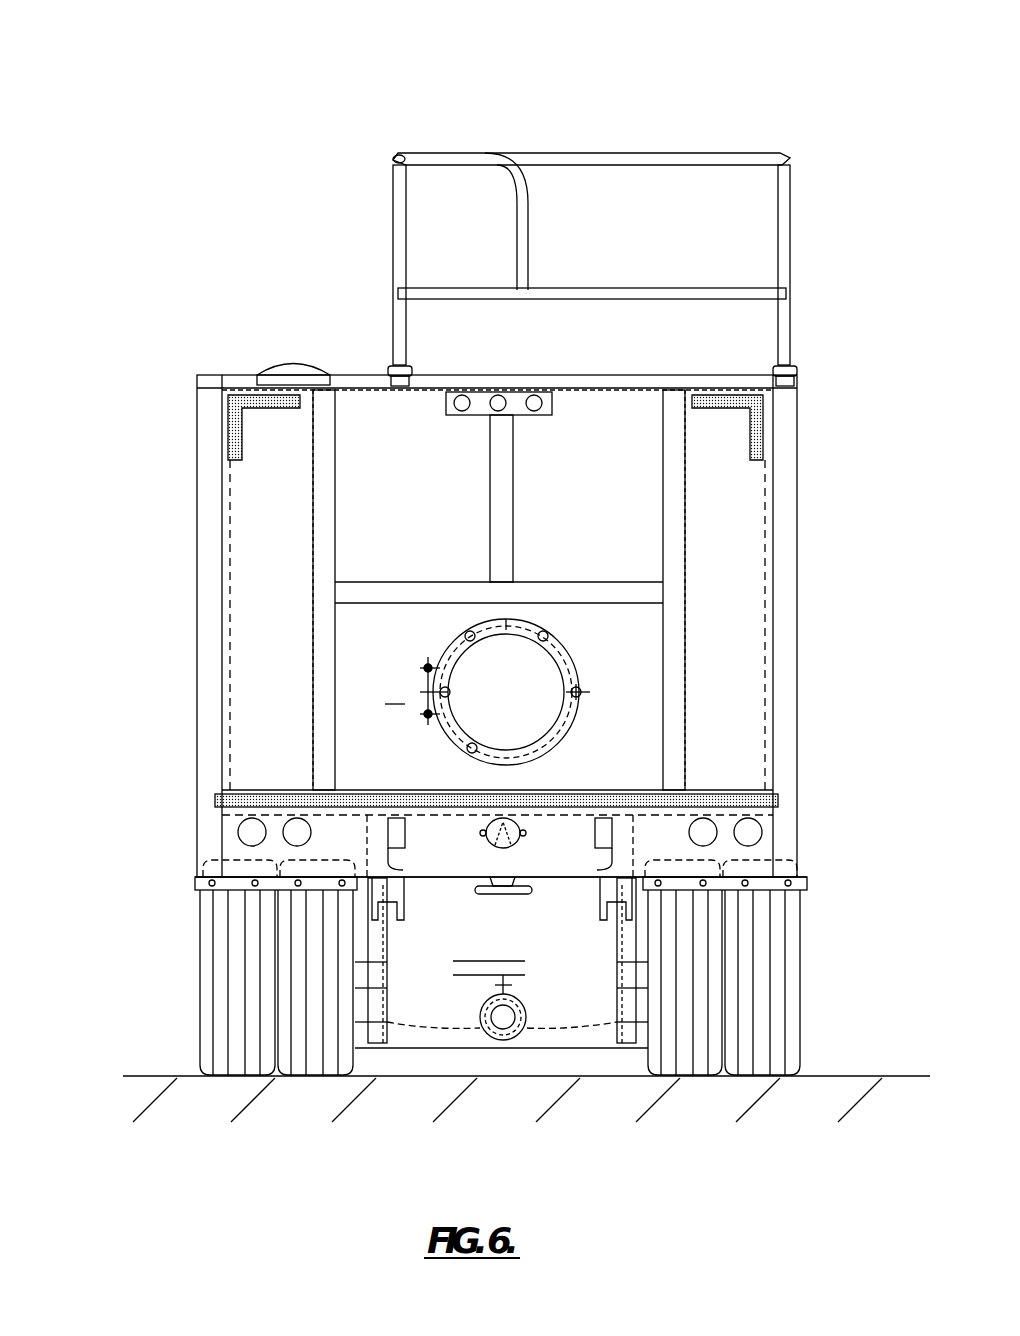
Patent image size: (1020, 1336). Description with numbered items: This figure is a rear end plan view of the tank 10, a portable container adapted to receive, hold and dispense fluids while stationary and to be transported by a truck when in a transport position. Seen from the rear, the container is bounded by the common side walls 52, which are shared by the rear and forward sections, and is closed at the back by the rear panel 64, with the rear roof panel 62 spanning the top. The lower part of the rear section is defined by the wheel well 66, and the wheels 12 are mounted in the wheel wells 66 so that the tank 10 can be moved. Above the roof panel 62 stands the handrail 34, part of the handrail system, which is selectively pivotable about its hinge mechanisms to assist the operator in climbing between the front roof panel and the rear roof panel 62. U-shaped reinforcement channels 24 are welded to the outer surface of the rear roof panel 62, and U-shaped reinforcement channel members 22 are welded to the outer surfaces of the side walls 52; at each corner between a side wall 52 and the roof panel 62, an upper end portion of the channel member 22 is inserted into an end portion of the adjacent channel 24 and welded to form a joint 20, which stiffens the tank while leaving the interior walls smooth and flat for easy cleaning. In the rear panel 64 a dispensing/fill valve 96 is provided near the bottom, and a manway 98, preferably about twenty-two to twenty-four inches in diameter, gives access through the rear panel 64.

The tank 10 is at (338, 84).
The wheels 12 is at (240, 975).
The joint 20 is at (186, 365).
The U-shaped reinforcement channel members 22 is at (210, 468).
The U-shaped reinforcement channels 24 is at (241, 378).
The handrail 34 is at (625, 153).
The side walls 52 is at (222, 563).
The roof panel 62 is at (365, 385).
The rear panel 64 is at (713, 552).
The wheel well 66 is at (840, 906).
The dispensing/fill valves 96 is at (495, 1017).
The manways 98 is at (535, 677).